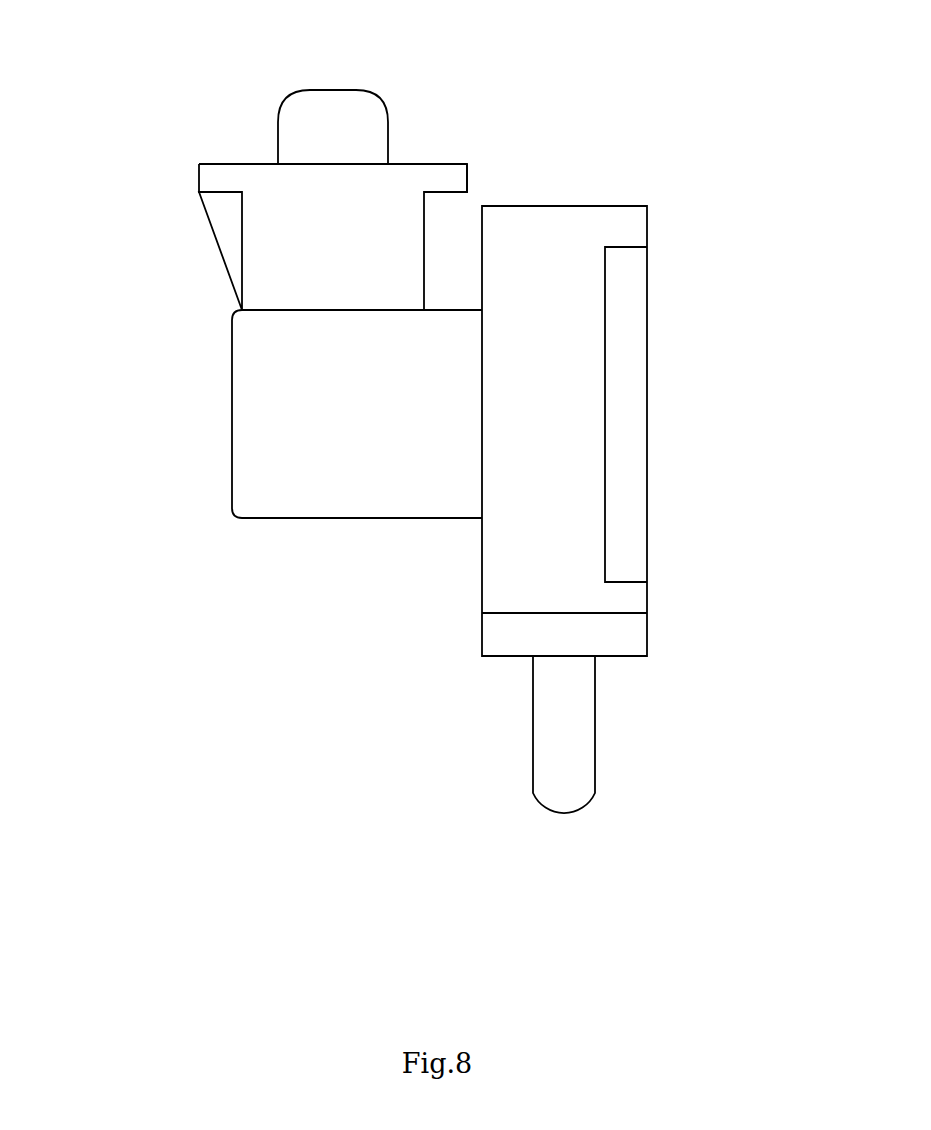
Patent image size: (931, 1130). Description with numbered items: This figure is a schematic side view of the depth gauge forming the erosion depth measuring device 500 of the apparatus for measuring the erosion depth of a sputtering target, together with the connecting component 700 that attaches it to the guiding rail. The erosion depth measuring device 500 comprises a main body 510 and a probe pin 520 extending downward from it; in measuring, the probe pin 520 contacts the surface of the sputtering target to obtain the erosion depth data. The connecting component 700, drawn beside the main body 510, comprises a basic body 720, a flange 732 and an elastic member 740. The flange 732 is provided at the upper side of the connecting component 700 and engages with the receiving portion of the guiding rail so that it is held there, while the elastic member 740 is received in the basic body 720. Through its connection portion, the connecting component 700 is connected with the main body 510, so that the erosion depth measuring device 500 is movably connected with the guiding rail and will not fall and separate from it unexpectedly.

The connecting component 700 is at (243, 113).
The elastic member 740 is at (333, 102).
The flange 732 is at (205, 182).
The basic body 720 is at (250, 282).
The erosion depth measuring device 500 is at (560, 168).
The main body 510 is at (644, 229).
The probe pin 520 is at (567, 802).